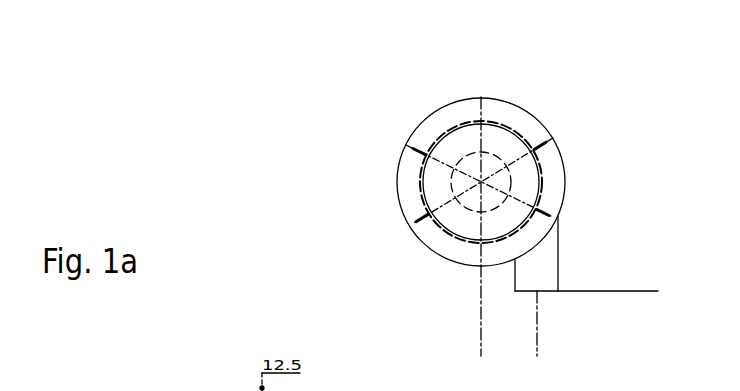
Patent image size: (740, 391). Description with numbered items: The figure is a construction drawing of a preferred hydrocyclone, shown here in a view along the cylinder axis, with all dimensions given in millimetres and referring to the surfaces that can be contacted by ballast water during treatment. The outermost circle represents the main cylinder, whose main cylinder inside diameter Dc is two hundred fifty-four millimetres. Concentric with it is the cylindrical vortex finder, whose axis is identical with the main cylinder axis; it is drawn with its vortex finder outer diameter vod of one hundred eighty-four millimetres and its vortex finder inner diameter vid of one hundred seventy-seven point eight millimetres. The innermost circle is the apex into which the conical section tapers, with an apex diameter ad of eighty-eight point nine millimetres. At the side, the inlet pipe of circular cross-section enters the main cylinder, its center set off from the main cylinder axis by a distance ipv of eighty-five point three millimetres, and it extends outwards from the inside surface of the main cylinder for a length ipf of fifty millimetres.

The main cylinder inside diameter Dc is at (481, 33).
The vortex finder inner diameter vid is at (355, 120).
The vortex finder outer diameter vod is at (553, 138).
The apex diameter ad is at (316, 181).
The inlet pipe extension length ipf is at (657, 255).
The inlet pipe offset distance ipv is at (542, 352).